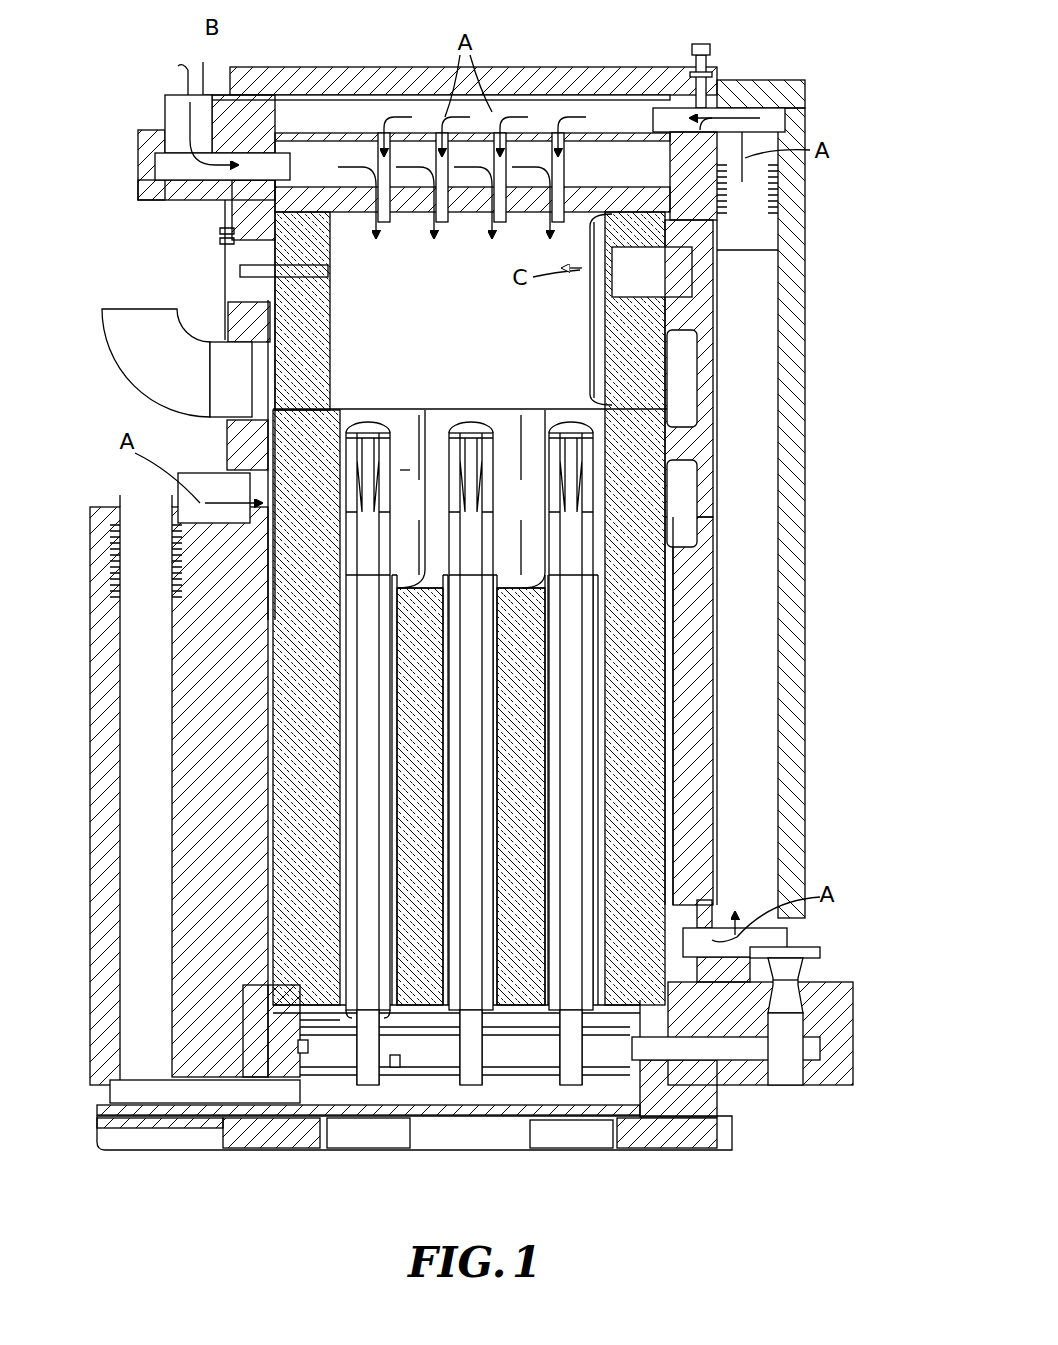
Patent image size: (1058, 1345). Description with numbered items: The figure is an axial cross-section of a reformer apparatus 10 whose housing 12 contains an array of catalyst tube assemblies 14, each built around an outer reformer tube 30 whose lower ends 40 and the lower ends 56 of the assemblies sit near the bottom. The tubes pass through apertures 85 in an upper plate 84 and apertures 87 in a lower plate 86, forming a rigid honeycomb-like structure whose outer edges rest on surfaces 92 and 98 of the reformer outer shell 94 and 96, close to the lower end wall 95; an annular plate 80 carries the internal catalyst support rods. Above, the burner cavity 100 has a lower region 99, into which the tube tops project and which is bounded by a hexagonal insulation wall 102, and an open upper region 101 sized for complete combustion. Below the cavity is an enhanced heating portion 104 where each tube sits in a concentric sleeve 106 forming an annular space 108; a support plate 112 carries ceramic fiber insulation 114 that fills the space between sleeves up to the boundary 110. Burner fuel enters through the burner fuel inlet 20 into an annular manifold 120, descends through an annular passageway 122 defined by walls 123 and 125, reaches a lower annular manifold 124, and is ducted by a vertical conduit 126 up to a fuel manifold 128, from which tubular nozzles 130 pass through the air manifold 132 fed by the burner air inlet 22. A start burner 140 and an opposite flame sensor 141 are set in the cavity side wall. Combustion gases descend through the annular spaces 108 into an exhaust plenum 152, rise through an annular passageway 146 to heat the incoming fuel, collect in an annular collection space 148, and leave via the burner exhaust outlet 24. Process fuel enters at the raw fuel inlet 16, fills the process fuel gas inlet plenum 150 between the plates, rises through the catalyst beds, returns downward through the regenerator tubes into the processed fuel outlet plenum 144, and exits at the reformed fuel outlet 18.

The reformer apparatus 10 is at (747, 72).
The housing 12 is at (812, 413).
The catalyst tube assemblies 14 is at (361, 418).
The raw fuel inlet 16 is at (813, 936).
The reformed fuel outlet 18 is at (132, 485).
The burner fuel inlet 20 is at (213, 485).
The burner air inlet 22 is at (172, 78).
The burner exhaust outlet 24 is at (138, 300).
The outer reformer tube 30 is at (400, 470).
The lower ends of reformer tubes 40 is at (388, 1086).
The lower ends of catalyst tube assemblies 56 is at (347, 1086).
The annular plate 80 is at (640, 1060).
The upper plate 84 is at (307, 1055).
The apertures of upper plate 85 is at (340, 1003).
The lower plate 86 is at (323, 1022).
The apertures of lower plate 87 is at (395, 1067).
The support surface 92 is at (273, 1020).
The reformer outer shell side wall 94 is at (305, 1053).
The lower end wall 95 is at (550, 1113).
The reformer outer shell side wall 96 is at (607, 1053).
The support surface 98 is at (650, 1068).
The lower region of burner cavity 99 is at (537, 510).
The burner cavity 100 is at (428, 356).
The upper region of burner cavity 101 is at (590, 310).
The hexagonal insulation wall 102 is at (640, 530).
The enhanced heating portion 104 is at (520, 697).
The sleeves 106 is at (340, 672).
The annular spaces 108 is at (443, 575).
The boundary 110 is at (440, 583).
The support plate 112 is at (585, 1070).
The ceramic fiber insulation 114 is at (660, 492).
The annular manifold 120 is at (252, 532).
The annular passageway 122 is at (262, 780).
The wall 123 is at (190, 548).
The annular manifold 124 is at (683, 915).
The wall 125 is at (253, 400).
The vertical conduit 126 is at (757, 462).
The fuel manifold 128 is at (568, 105).
The tubular nozzles 130 is at (562, 170).
The air manifold 132 is at (342, 150).
The start burner 140 is at (595, 270).
The flame sensor 141 is at (240, 270).
The processed fuel outlet plenum 144 is at (433, 1093).
The annular passageway 146 is at (670, 718).
The annular collection space 148 is at (678, 395).
The process fuel gas inlet plenum 150 is at (522, 1060).
The exhaust plenum 152 is at (420, 1008).